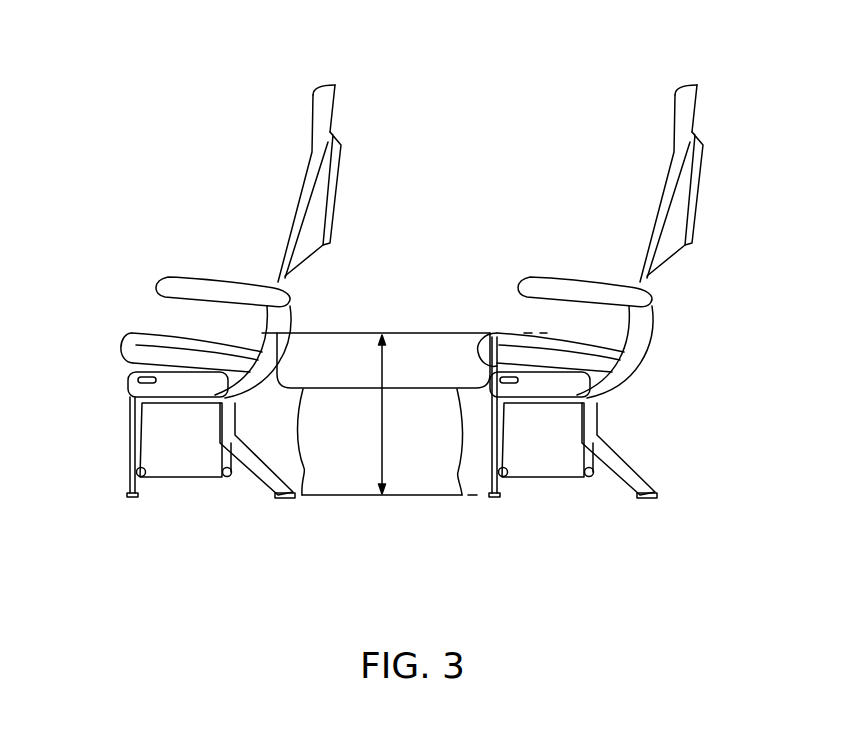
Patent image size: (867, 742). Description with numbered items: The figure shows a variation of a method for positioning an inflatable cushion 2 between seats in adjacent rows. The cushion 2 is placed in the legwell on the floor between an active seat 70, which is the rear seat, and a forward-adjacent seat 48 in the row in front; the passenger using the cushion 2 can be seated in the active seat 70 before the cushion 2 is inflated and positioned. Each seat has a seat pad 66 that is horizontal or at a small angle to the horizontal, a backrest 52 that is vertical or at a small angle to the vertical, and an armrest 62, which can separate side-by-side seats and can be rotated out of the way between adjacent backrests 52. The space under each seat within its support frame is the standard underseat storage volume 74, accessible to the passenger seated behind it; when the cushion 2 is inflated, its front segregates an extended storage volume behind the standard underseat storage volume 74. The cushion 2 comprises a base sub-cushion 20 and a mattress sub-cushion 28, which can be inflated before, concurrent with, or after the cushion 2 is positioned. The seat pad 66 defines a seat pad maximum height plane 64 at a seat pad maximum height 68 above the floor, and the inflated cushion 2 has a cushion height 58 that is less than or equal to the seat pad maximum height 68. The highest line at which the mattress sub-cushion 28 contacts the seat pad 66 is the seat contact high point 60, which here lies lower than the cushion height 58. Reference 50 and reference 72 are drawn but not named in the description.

The forward-adjacent seat 48 is at (207, 82).
The first passenger seat 50 is at (275, 328).
The backrest 52 is at (315, 198).
The mattress sub-cushion 28 is at (347, 363).
The cushion height 58 is at (385, 362).
The seat contact high point 60 is at (488, 333).
The seat pad maximum height plane 64 is at (560, 291).
The armrest 62 is at (622, 331).
The seat pad 66 is at (593, 375).
The seat pad maximum height 68 is at (592, 417).
The active seat 70 is at (566, 477).
The gap between seat and table 72 is at (287, 436).
The standard underseat storage volume 74 is at (180, 456).
The cushion 2 is at (348, 500).
The base sub-cushion 20 is at (433, 475).